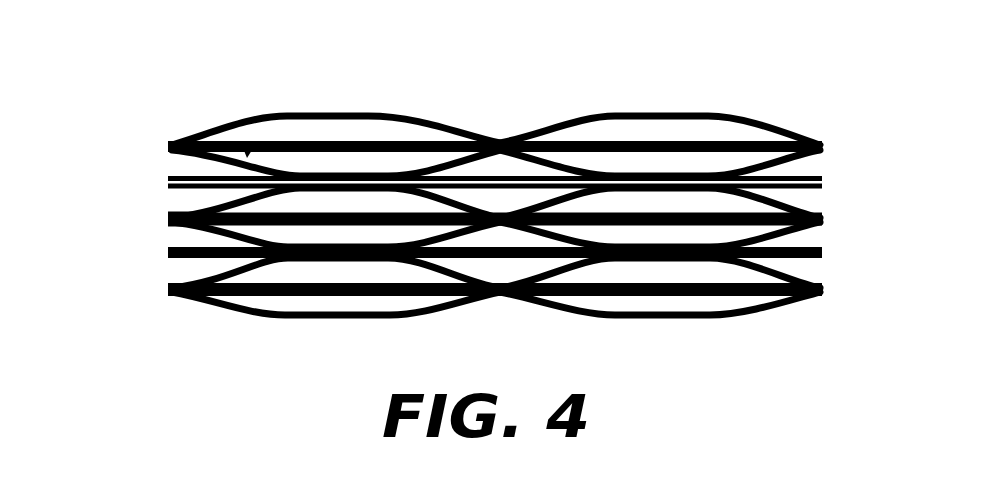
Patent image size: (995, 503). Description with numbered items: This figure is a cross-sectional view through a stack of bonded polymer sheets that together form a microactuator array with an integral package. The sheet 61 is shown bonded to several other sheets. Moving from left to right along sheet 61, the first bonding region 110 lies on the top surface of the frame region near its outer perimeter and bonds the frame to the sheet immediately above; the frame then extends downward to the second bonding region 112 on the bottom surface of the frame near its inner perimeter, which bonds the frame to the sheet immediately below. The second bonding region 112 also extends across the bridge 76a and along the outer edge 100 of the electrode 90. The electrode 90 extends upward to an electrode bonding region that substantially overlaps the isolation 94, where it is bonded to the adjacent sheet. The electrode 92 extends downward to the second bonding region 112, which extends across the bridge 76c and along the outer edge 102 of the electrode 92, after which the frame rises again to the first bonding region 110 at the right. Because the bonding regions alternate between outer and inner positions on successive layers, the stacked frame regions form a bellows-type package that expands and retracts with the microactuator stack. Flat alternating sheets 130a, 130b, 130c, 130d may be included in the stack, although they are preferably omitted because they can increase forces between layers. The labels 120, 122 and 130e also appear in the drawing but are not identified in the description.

The first bonding region 110 is at (168, 144).
The first strand 120 is at (215, 133).
The sheet 61 is at (252, 143).
The second bonding region 112 is at (283, 176).
The bridge 76a is at (337, 175).
The bridge 76c is at (670, 174).
The outer edge of electrode 100 is at (381, 175).
The electrode 90 is at (453, 131).
The isolation 94 is at (507, 139).
The electrode 92 is at (597, 140).
The outer edge of electrode 102 is at (655, 141).
The alternating sheet 130a is at (748, 140).
The alternating sheet 130b is at (823, 184).
The alternating sheet 130c is at (823, 220).
The alternating sheet 130d is at (823, 255).
The longitudinal wire 130e is at (733, 295).
The wire end junction 122 is at (187, 208).